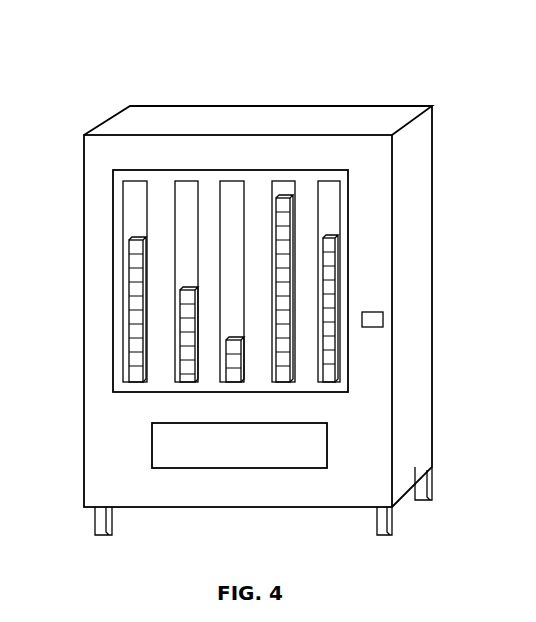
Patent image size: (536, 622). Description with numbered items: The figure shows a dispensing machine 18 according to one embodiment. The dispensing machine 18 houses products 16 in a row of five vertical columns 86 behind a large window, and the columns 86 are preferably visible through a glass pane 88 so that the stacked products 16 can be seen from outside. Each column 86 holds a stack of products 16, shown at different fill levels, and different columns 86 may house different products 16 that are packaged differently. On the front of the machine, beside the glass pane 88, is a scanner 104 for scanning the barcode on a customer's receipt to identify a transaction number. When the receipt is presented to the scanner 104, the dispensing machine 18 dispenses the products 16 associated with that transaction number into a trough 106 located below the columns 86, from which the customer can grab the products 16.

The dispensing machine 18 is at (371, 54).
The products 16 is at (333, 247).
The columns 86 is at (123, 197).
The glass pane 88 is at (113, 312).
The scanner 104 is at (383, 318).
The trough 106 is at (293, 468).